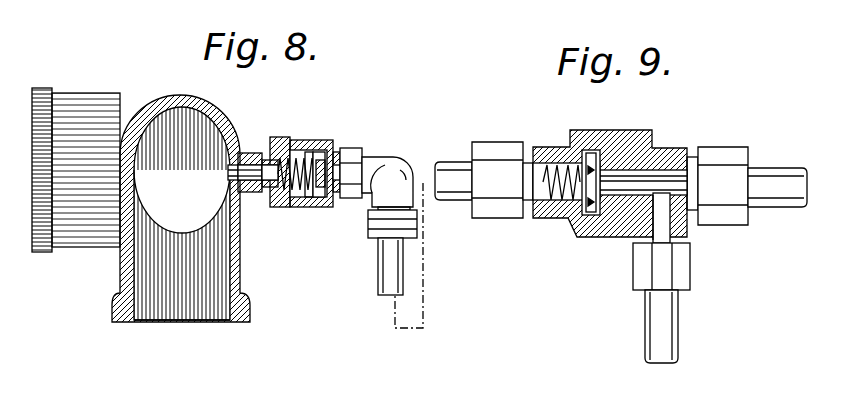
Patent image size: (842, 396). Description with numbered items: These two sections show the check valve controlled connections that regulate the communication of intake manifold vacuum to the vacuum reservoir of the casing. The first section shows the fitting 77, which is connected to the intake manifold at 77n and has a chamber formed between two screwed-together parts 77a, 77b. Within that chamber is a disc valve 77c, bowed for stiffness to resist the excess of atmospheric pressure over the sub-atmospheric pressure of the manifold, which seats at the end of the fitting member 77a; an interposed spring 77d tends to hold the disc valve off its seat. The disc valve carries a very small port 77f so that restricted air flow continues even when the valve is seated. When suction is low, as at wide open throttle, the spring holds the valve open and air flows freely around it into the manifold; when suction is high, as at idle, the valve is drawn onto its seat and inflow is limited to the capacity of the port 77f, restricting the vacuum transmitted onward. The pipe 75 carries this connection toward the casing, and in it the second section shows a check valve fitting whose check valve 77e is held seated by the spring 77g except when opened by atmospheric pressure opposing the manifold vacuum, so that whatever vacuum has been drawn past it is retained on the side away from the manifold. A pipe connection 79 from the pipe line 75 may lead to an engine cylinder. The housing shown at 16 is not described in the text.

In FIG. 8, the housing 16 is at (238, 272).
In FIG. 8, the pipe 75 is at (403, 282).
In FIG. 9, the pipe 75 is at (452, 195).
In FIG. 8, the fitting 77 is at (343, 164).
In FIG. 9, the fitting 77 is at (603, 180).
In FIG. 8, the fitting member 77a is at (303, 150).
In FIG. 8, the fitting part 77b is at (328, 142).
In FIG. 8, the disc valve 77c is at (353, 155).
In FIG. 8, the spring 77d is at (292, 208).
In FIG. 9, the check valve 77e is at (592, 155).
In FIG. 8, the port 77f is at (328, 208).
In FIG. 9, the spring 77g is at (538, 220).
In FIG. 8, the connection to intake manifold 77n is at (250, 157).
In FIG. 9, the pipe connection 79 is at (670, 328).